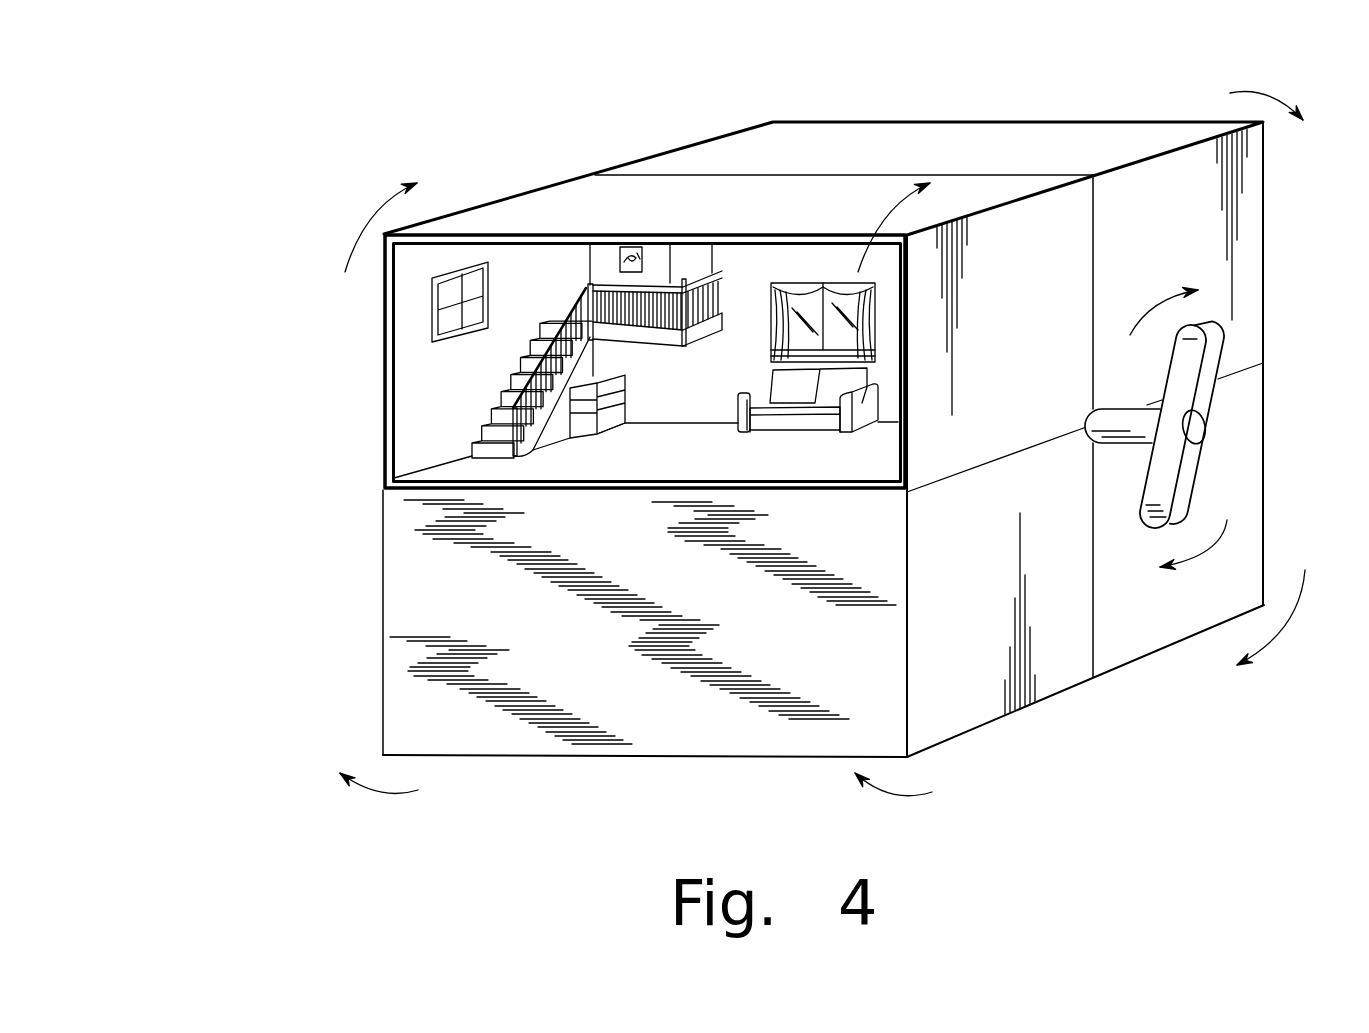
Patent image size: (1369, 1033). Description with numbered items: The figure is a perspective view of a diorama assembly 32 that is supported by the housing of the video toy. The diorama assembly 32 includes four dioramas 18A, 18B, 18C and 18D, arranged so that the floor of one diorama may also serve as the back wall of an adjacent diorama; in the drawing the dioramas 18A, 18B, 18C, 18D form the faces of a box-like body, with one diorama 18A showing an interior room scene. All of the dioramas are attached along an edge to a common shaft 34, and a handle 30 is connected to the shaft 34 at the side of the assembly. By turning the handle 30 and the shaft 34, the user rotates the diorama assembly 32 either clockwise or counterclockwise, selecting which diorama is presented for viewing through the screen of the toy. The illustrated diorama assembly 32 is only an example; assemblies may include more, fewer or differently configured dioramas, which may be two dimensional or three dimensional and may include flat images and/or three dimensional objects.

The diorama assembly 32 is at (745, 396).
The diorama 18A is at (381, 360).
The diorama 18B is at (383, 633).
The diorama 18C is at (1264, 213).
The diorama 18D is at (1265, 513).
The handle 30 is at (1227, 362).
The shaft 34 is at (1103, 444).